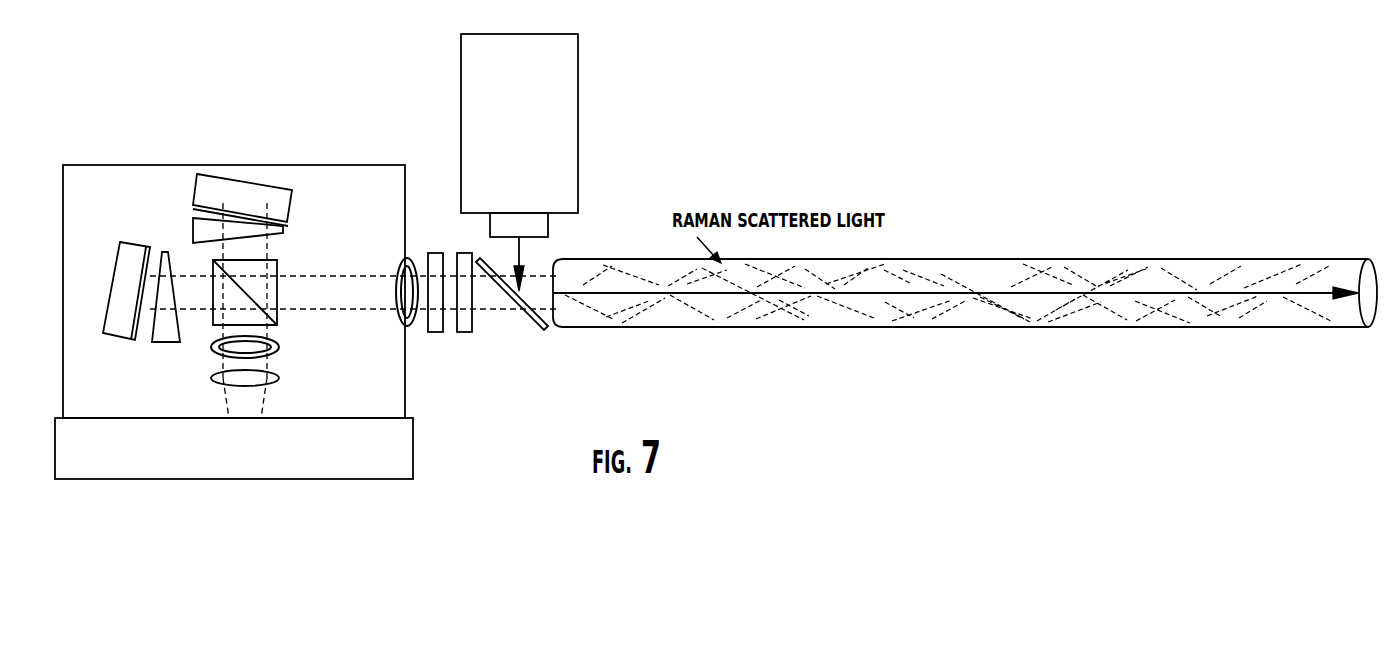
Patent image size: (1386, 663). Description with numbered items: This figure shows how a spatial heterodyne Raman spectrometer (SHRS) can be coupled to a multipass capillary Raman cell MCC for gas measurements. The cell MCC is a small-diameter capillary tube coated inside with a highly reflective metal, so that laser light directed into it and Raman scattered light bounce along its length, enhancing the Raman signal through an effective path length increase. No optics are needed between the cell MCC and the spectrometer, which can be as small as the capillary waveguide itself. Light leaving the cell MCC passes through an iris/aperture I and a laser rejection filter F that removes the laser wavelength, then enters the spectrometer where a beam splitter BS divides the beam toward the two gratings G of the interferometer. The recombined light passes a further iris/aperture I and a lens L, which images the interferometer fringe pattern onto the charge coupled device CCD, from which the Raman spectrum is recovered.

The grating G is at (190, 257).
The beam splitter BS is at (225, 282).
The iris/aperture I is at (306, 299).
The lens L is at (253, 383).
The laser rejection filter F is at (450, 310).
The charge coupled device CCD is at (234, 448).
The multipass capillary Raman cell MCC is at (965, 268).